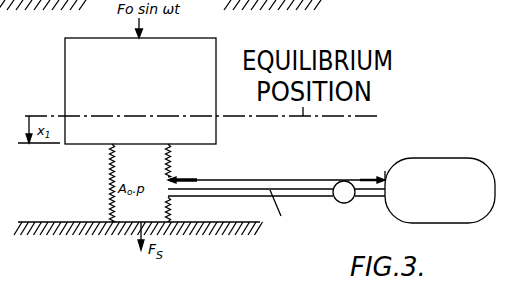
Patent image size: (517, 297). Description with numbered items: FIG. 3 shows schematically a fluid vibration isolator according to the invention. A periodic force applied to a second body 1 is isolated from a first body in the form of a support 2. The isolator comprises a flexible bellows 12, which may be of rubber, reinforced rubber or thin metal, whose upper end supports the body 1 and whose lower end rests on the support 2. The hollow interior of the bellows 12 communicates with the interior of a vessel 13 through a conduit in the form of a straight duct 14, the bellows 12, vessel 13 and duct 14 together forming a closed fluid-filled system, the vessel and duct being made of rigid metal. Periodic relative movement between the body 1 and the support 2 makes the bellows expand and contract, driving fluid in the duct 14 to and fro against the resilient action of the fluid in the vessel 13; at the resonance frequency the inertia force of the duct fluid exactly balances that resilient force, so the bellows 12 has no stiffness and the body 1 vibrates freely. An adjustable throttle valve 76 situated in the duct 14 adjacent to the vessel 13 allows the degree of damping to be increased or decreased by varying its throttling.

The second body 1 is at (65, 65).
The support 2 is at (208, 224).
The flexible bellows 12 is at (108, 172).
The vessel 13 is at (425, 158).
The straight duct 14 is at (310, 197).
The adjustable throttle valve 76 is at (348, 203).